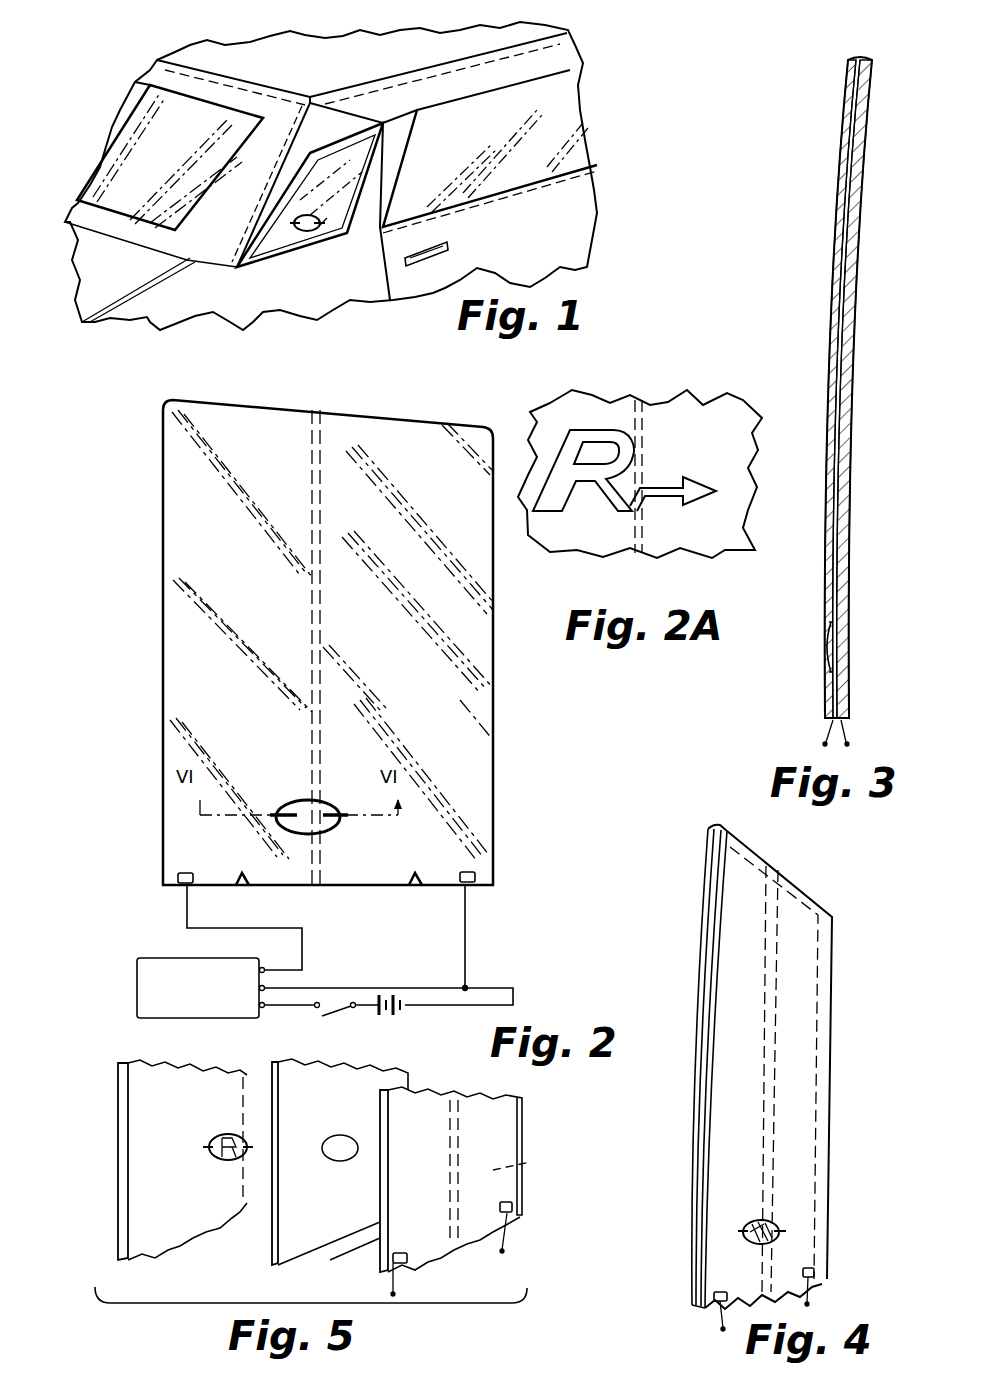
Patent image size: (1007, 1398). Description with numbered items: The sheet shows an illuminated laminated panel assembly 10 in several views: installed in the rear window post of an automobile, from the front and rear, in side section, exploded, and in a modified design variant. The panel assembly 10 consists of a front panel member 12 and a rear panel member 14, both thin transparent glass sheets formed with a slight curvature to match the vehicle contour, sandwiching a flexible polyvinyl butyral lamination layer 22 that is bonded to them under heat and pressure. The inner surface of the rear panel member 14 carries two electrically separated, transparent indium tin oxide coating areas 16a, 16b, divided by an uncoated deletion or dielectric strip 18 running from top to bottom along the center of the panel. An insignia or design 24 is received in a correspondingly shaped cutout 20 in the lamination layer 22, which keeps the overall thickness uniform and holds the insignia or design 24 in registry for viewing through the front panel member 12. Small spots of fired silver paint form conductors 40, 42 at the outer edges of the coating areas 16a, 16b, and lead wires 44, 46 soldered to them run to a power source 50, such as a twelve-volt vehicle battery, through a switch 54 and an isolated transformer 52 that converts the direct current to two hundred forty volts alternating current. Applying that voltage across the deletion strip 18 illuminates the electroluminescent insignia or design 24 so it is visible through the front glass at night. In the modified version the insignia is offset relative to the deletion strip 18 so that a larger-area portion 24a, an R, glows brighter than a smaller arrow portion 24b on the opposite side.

In FIG. 1, the panel assembly 10 is at (278, 240).
In FIG. 2, the panel assembly 10 is at (370, 412).
In FIG. 3, the panel assembly 10 is at (882, 82).
In FIG. 4, the panel assembly 10 is at (814, 886).
In FIG. 2, the front panel member 12 is at (167, 512).
In FIG. 2A, the front panel member 12 is at (725, 398).
In FIG. 3, the front panel member 12 is at (840, 145).
In FIG. 4, the front panel member 12 is at (694, 975).
In FIG. 5, the front panel member 12 is at (143, 1188).
In FIG. 3, the rear panel member 14 is at (863, 150).
In FIG. 4, the rear panel member 14 is at (810, 984).
In FIG. 5, the rear panel member 14 is at (495, 1130).
In FIG. 5, the first transparent electrically conductive coating area 16a is at (338, 1263).
In FIG. 5, the second transparent electrically conductive coating area 16b is at (530, 1162).
In FIG. 2, the deletion or dielectric strip 18 is at (310, 478).
In FIG. 2A, the deletion or dielectric strip 18 is at (637, 400).
In FIG. 4, the deletion or dielectric strip 18 is at (763, 1097).
In FIG. 5, the deletion or dielectric strip 18 is at (453, 1133).
In FIG. 5, the cutout 20 is at (337, 1146).
In FIG. 3, the lamination layer 22 is at (848, 203).
In FIG. 5, the lamination layer 22 is at (277, 1233).
In FIG. 1, the insignia or design 24 is at (317, 227).
In FIG. 2, the insignia or design 24 is at (333, 800).
In FIG. 3, the insignia or design 24 is at (852, 650).
In FIG. 4, the insignia or design 24 is at (778, 1217).
In FIG. 5, the insignia or design 24 is at (217, 1137).
In FIG. 2A, the brighter insignia portion 24a is at (553, 502).
In FIG. 2A, the dimmer insignia portion 24b is at (707, 500).
In FIG. 2, the first conductor 40 is at (185, 873).
In FIG. 4, the first conductor 40 is at (716, 1290).
In FIG. 5, the first conductor 40 is at (407, 1248).
In FIG. 2, the second conductor 42 is at (472, 872).
In FIG. 4, the second conductor 42 is at (818, 1268).
In FIG. 5, the second conductor 42 is at (508, 1203).
In FIG. 2, the first lead wire 44 is at (187, 904).
In FIG. 3, the first lead wire 44 is at (832, 732).
In FIG. 4, the first lead wire 44 is at (721, 1317).
In FIG. 5, the first lead wire 44 is at (392, 1285).
In FIG. 2, the second lead wire 46 is at (465, 907).
In FIG. 3, the second lead wire 46 is at (840, 732).
In FIG. 4, the second lead wire 46 is at (810, 1294).
In FIG. 5, the second lead wire 46 is at (503, 1242).
In FIG. 2, the power source 50 is at (405, 990).
In FIG. 2, the transformer 52 is at (137, 990).
In FIG. 2, the switch 54 is at (342, 1009).